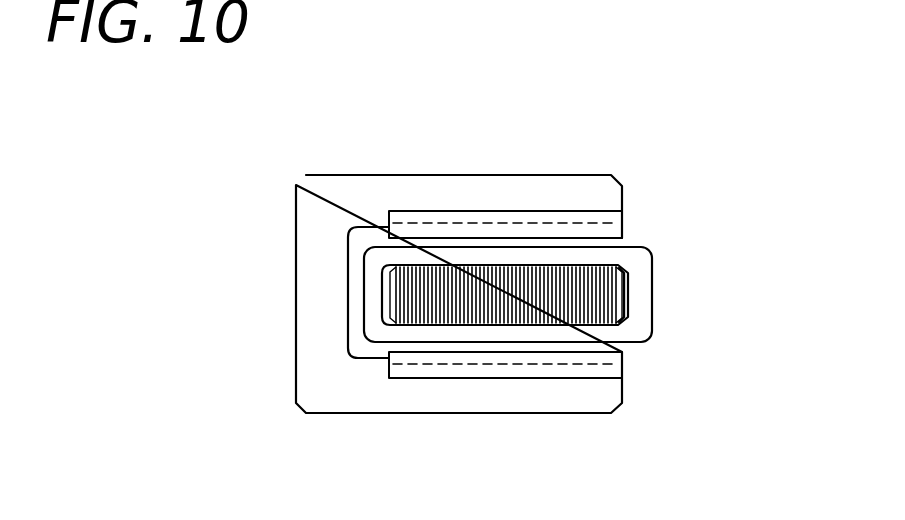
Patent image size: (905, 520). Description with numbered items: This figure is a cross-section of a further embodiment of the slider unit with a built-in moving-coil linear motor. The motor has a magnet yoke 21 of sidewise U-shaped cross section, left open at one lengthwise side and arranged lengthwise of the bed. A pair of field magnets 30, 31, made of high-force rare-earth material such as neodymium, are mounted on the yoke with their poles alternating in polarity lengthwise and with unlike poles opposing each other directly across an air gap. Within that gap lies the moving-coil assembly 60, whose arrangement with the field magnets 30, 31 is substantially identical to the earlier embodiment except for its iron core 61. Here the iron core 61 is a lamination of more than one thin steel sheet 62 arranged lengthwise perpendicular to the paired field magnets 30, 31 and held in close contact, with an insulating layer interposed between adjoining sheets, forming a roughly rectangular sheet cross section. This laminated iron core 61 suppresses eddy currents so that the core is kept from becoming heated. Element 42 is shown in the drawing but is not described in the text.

The magnet yoke 21 is at (520, 190).
The field magnet 30 is at (610, 221).
The field magnet 31 is at (610, 370).
The coil holder frame 42 is at (640, 278).
The moving-coil assembly 60 is at (654, 340).
The iron core 61 is at (632, 312).
The thin steel sheet 62 is at (425, 297).